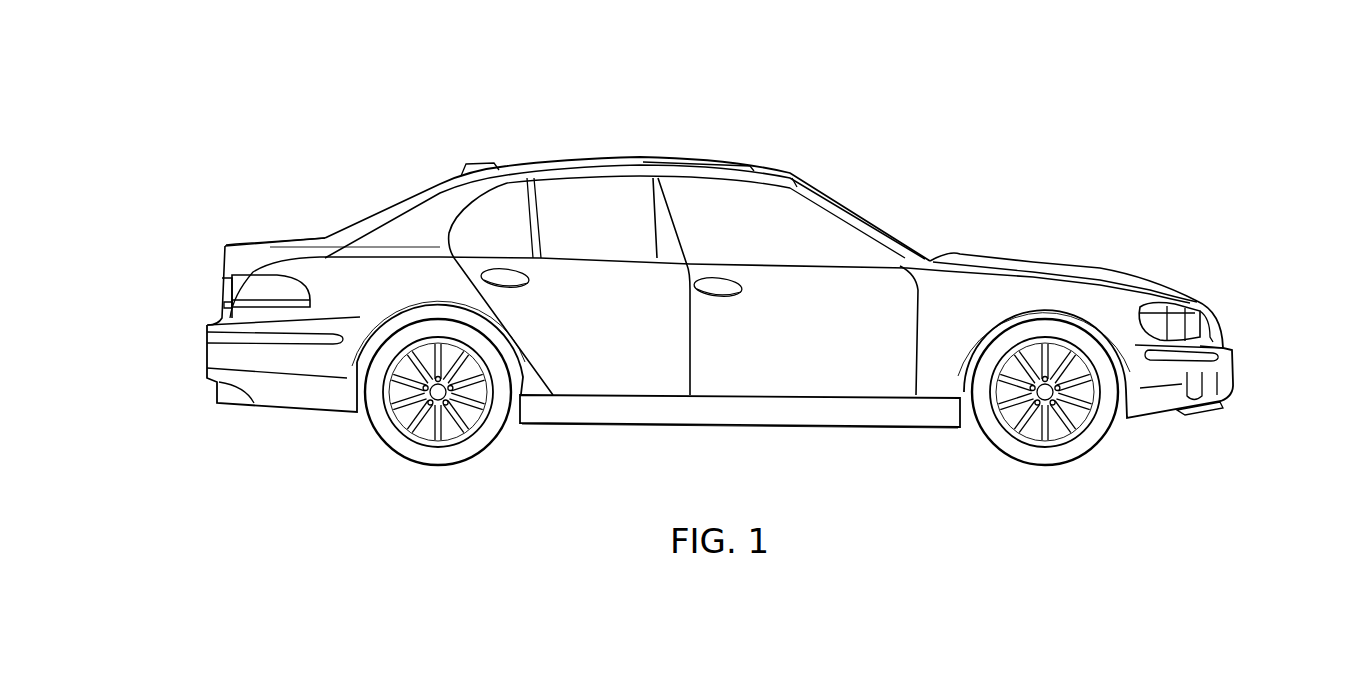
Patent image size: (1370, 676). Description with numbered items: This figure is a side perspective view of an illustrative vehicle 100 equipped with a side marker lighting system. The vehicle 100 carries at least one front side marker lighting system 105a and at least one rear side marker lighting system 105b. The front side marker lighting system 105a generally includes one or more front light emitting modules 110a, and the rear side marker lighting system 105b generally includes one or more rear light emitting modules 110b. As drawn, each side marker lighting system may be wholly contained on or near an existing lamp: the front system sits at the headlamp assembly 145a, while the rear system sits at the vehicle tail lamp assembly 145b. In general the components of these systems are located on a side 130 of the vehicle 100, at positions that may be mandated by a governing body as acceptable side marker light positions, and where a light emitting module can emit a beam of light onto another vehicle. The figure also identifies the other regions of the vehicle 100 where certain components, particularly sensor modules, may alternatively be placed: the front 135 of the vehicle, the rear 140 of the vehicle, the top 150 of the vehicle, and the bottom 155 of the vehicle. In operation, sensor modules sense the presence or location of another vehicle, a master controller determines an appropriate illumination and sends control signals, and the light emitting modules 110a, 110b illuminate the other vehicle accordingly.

The vehicle 100 is at (367, 167).
The top of the vehicle 150 is at (640, 141).
The rear side marker lighting system 105b is at (226, 244).
The rear light emitting module 110b is at (267, 285).
The vehicle tail lamp assembly 145b is at (234, 297).
The rear of the vehicle 140 is at (181, 333).
The side of the vehicle 130 is at (767, 378).
The bottom of the vehicle 155 is at (897, 452).
The front light emitting module 110a is at (1148, 308).
The headlamp assembly 145a is at (1200, 324).
The front of the vehicle 135 is at (1248, 343).
The front side marker lighting system 105a is at (1206, 345).